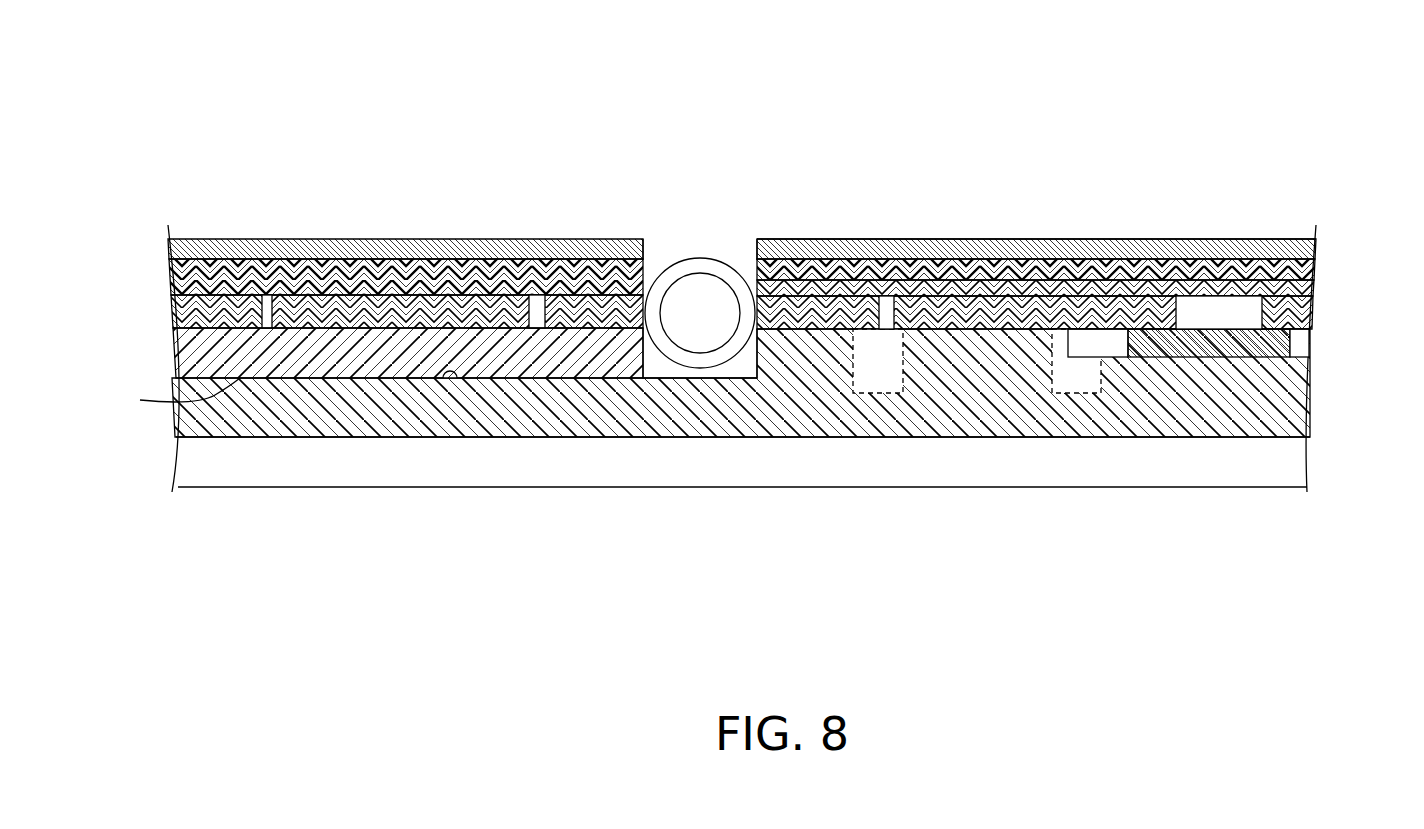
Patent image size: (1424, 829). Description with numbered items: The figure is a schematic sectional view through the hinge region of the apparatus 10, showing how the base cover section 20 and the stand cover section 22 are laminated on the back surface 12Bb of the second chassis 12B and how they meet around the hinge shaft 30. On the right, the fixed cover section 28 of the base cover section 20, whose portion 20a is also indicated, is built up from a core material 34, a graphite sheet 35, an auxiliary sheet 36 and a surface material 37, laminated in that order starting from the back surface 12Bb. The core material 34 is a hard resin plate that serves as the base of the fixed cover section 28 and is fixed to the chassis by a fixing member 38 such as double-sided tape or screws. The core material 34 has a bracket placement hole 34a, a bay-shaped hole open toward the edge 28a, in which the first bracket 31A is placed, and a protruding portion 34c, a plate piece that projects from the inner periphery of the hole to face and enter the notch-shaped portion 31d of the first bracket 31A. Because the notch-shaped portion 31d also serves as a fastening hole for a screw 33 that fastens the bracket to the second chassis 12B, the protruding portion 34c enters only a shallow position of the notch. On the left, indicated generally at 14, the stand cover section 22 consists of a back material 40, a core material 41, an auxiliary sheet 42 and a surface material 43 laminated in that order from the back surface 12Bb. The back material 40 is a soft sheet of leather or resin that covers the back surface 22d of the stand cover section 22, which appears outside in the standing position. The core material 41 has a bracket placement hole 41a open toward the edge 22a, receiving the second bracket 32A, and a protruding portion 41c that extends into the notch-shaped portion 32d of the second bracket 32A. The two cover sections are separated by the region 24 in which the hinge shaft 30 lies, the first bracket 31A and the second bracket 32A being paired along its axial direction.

The liquid ejecting head 10 is at (154, 96).
The second chassis 12B is at (747, 500).
The back surface of the second chassis 12Bb is at (450, 378).
The first laminated structure 14 is at (335, 176).
The base cover section 20 is at (1189, 190).
The upper surface of second laminated structure 20a is at (1140, 239).
The stand cover section 22 is at (110, 220).
The edge 22a is at (648, 250).
The back surface of the stand cover section 22d is at (168, 396).
The groove 24 is at (658, 380).
The fixed cover section 28 is at (1375, 218).
The edge 28a is at (752, 250).
The hinge shaft 30 is at (700, 290).
The first bracket 31A is at (1010, 300).
The notch-shaped portion 31d is at (888, 318).
The second bracket 32A is at (388, 300).
The notch-shaped portion 32d is at (537, 318).
The screw 33 is at (862, 393).
The core material 34 is at (1313, 318).
The bracket placement hole 34a is at (1235, 310).
The protruding portion 34c is at (811, 283).
The graphite sheet 35 is at (1313, 289).
The auxiliary sheet 36 is at (1312, 273).
The surface material 37 is at (1320, 248).
The fixing member 38 is at (1250, 352).
The back material 40 is at (174, 345).
The core material 41 is at (176, 308).
The bracket placement hole 41a is at (278, 305).
The protruding portion 41c is at (580, 300).
The auxiliary sheet 42 is at (170, 278).
The surface material 43 is at (167, 247).